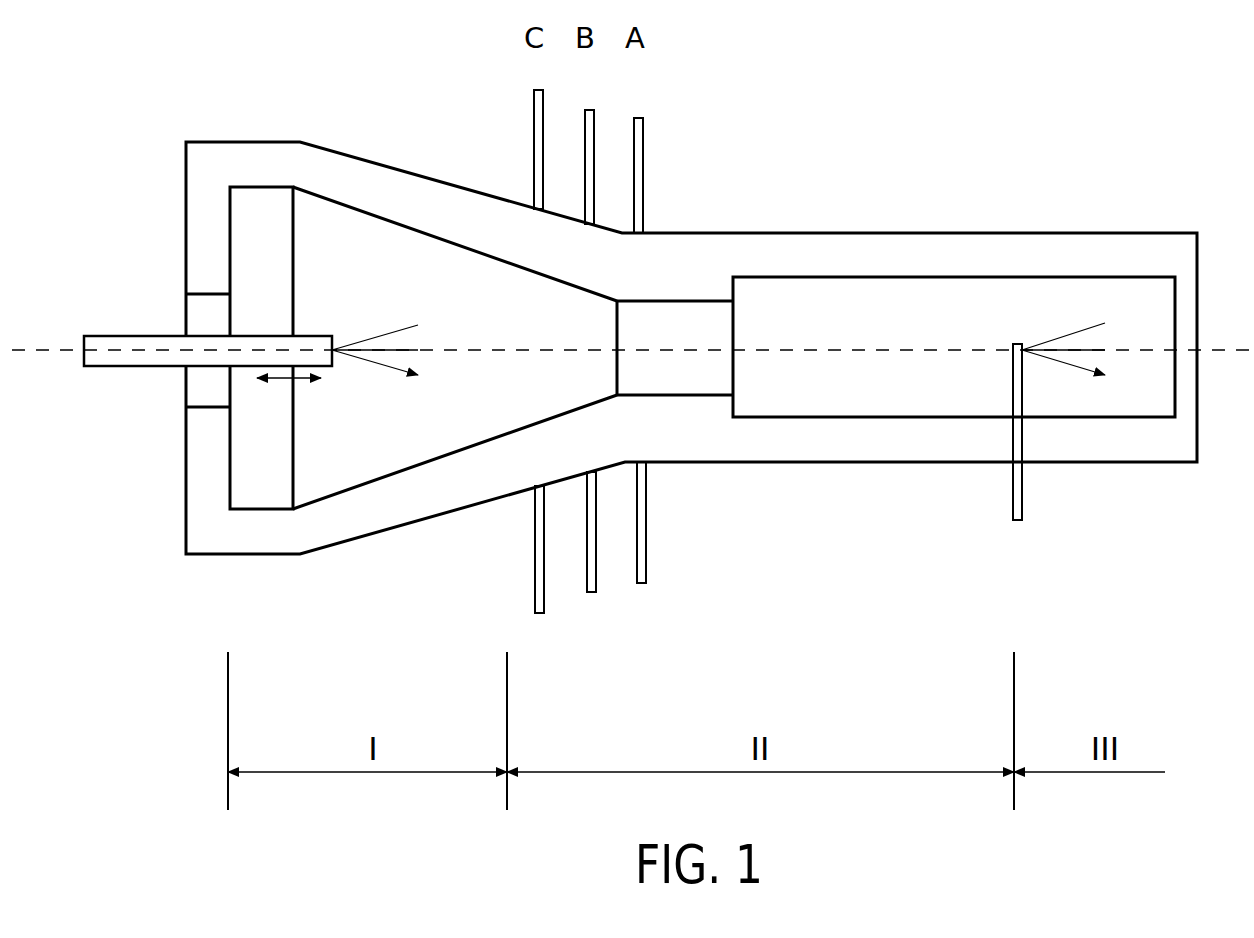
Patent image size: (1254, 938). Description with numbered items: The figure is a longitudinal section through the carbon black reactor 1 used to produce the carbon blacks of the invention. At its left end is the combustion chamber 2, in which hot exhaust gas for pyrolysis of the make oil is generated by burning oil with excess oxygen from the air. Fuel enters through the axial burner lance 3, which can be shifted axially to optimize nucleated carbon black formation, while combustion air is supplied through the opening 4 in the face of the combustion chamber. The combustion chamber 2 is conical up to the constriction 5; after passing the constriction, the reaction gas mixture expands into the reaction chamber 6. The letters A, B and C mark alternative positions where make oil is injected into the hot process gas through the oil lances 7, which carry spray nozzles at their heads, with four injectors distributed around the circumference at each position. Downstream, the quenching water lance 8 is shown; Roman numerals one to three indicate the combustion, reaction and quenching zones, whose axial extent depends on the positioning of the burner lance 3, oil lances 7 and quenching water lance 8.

The carbon black reactor 1 is at (815, 233).
The combustion chamber 2 is at (363, 248).
The axial burner lance 3 is at (104, 346).
The opening 4 is at (202, 318).
The constriction 5 is at (662, 317).
The reaction chamber 6 is at (967, 300).
The oil lances 7 is at (544, 547).
The quenching water lance 8 is at (1023, 497).